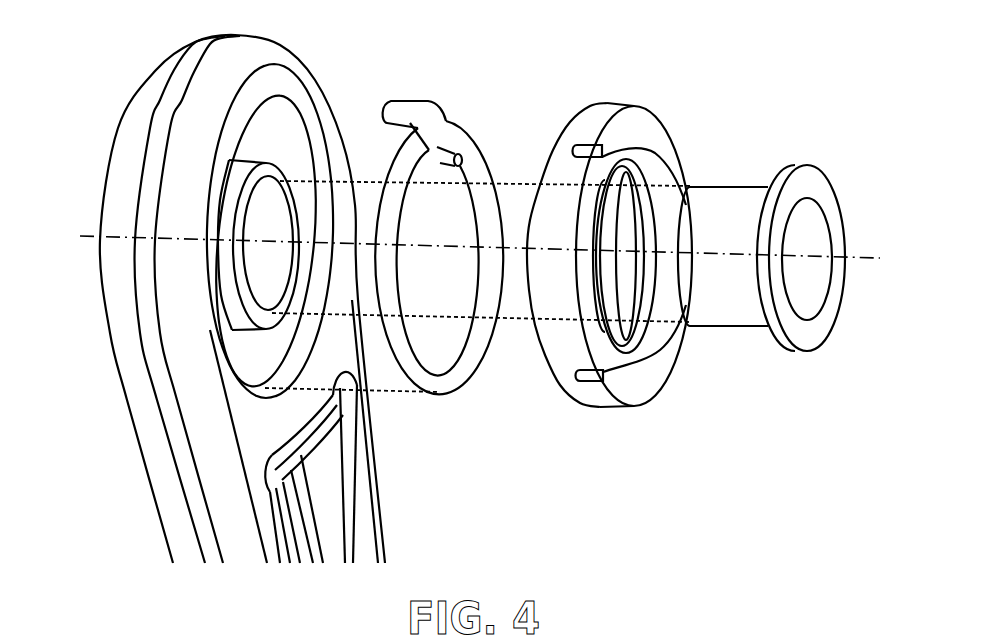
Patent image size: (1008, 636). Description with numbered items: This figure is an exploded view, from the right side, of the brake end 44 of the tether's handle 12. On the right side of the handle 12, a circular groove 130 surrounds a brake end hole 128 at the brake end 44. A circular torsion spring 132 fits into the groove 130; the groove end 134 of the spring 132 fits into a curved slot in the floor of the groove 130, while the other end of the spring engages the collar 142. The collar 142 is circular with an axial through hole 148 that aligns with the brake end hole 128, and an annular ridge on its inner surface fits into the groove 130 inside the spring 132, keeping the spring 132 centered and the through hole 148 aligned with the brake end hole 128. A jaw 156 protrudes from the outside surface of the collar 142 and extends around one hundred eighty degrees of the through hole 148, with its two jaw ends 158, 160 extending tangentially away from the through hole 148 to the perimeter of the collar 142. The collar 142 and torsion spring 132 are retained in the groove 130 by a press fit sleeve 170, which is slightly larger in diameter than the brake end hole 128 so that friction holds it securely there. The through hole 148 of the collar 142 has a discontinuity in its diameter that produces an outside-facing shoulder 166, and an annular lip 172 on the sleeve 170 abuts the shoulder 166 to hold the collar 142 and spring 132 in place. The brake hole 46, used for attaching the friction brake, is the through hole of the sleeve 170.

The handle 12 is at (102, 155).
The brake end 44 is at (220, 34).
The brake hole 46 is at (830, 226).
The brake end hole 128 is at (267, 212).
The circular groove 130 is at (292, 135).
The circular torsion spring 132 is at (445, 119).
The groove end 134 is at (387, 103).
The collar 142 is at (620, 255).
The through hole 148 is at (585, 288).
The jaw 156 is at (686, 336).
The jaw end 158 is at (626, 112).
The jaw end 160 is at (637, 393).
The outside-facing shoulder 166 is at (636, 165).
The press fit sleeve 170 is at (750, 186).
The annular lip 172 is at (812, 165).